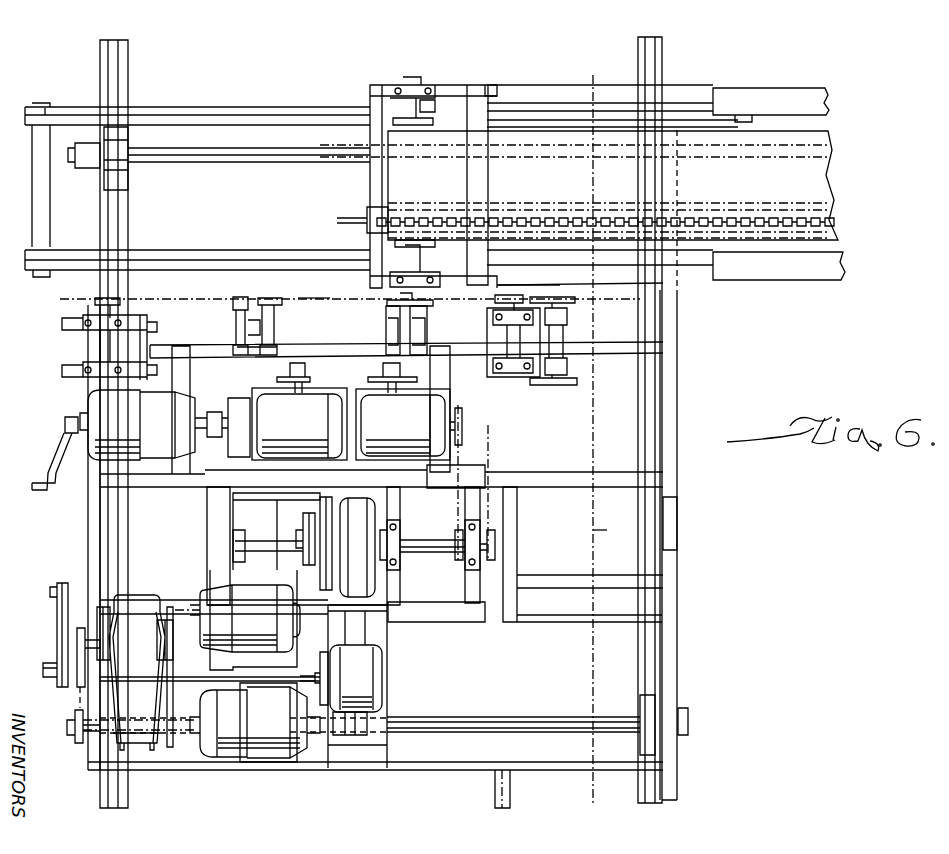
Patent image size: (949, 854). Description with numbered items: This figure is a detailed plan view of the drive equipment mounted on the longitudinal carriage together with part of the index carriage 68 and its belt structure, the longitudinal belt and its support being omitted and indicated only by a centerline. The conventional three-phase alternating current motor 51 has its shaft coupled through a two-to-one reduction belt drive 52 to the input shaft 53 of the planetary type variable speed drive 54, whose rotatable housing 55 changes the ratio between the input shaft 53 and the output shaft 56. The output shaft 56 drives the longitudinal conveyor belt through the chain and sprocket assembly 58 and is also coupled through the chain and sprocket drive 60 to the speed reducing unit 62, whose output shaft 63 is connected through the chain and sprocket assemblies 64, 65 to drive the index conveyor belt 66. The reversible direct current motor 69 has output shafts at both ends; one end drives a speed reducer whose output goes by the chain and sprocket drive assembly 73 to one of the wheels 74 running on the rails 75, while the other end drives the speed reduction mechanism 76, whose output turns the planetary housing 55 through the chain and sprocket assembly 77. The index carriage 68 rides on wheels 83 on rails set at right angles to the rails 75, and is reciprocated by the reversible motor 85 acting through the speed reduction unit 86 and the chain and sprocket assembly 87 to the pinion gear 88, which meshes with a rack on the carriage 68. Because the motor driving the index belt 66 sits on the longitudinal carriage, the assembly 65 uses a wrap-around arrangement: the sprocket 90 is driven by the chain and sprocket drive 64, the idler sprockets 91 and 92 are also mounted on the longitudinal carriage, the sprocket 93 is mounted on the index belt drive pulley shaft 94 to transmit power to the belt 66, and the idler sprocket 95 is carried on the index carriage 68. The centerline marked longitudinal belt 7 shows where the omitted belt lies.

The rails 75 is at (128, 72).
The chain and sprocket assembly 64 is at (272, 95).
The wheels 83 is at (394, 98).
The index carriage 68 is at (535, 92).
The index conveyor belt 66 is at (812, 177).
The reversible direct current motor 69 is at (550, 185).
The pinion gear 88 is at (353, 215).
The idler sprocket 92 is at (98, 290).
The idler sprocket 95 is at (277, 290).
The chain and sprocket assembly 65 is at (302, 302).
The index belt drive pulley shaft 94 is at (385, 293).
The chain and sprocket assembly 87 is at (385, 330).
The sprocket 93 is at (492, 312).
The idler sprocket 91 is at (520, 298).
The sprocket 90 is at (577, 300).
The output shaft 63 is at (500, 368).
The chain and sprocket assembly 58 is at (488, 460).
The reversible motor 85 is at (141, 440).
The speed reduction unit 86 is at (299, 424).
The speed reducing unit 62 is at (409, 424).
The planetary type variable speed drive 54 is at (358, 507).
The rotatable housing 55 is at (276, 515).
The input shaft 53 is at (293, 543).
The reduction belt drive 52 is at (300, 556).
The chain and sprocket drive 60 is at (455, 500).
The output shaft 56 is at (432, 540).
The alternating current motor 51 is at (237, 620).
The chain and sprocket drive assembly 73 is at (78, 695).
The wheels 74 is at (78, 759).
The chain and sprocket assembly 77 is at (323, 637).
The speed reduction mechanism 76 is at (355, 680).
The longitudinal belt 7 is at (700, 553).